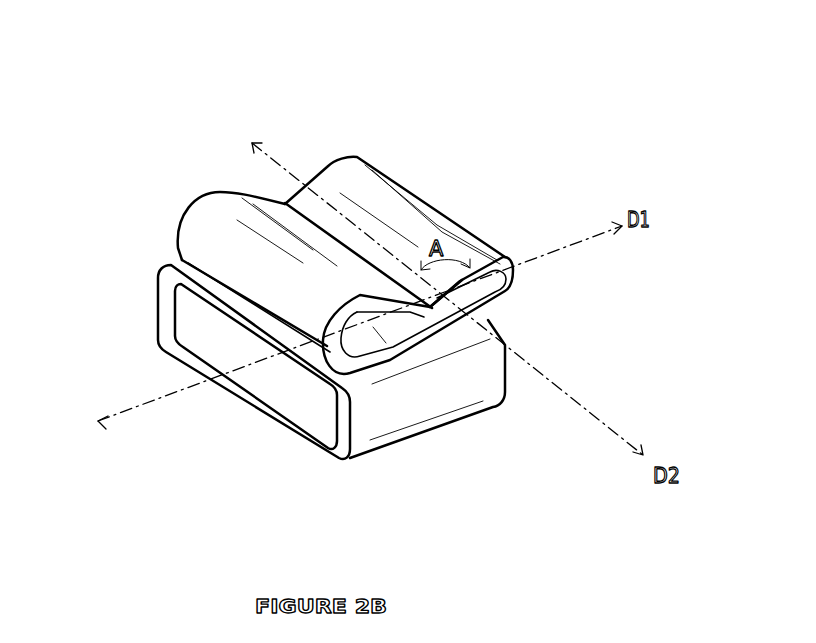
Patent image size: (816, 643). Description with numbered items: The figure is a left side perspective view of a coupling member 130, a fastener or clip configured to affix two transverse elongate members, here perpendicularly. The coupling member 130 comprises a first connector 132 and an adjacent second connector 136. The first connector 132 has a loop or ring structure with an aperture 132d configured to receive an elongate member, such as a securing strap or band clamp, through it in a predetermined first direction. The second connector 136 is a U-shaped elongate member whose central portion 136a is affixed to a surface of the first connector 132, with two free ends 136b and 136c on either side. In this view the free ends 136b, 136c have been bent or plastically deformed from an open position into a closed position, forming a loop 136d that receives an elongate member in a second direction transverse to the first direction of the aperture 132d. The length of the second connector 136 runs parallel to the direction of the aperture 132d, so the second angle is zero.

The coupling member 130 is at (367, 263).
The first connector 132 is at (297, 376).
The aperture 132d is at (270, 396).
The second connector 136 is at (355, 244).
The central portion 136a is at (482, 318).
The free end 136b is at (222, 240).
The free end 136c is at (350, 177).
The loop 136d is at (370, 328).